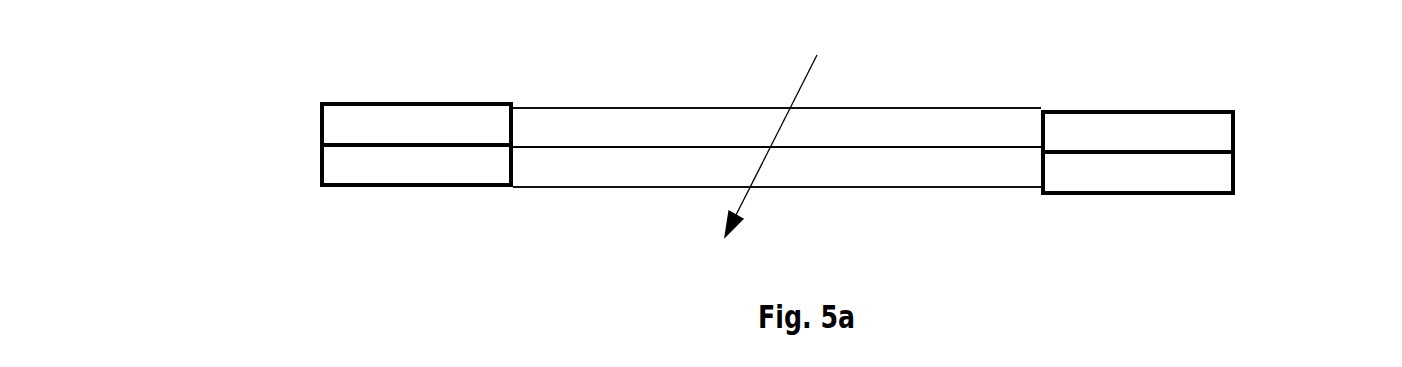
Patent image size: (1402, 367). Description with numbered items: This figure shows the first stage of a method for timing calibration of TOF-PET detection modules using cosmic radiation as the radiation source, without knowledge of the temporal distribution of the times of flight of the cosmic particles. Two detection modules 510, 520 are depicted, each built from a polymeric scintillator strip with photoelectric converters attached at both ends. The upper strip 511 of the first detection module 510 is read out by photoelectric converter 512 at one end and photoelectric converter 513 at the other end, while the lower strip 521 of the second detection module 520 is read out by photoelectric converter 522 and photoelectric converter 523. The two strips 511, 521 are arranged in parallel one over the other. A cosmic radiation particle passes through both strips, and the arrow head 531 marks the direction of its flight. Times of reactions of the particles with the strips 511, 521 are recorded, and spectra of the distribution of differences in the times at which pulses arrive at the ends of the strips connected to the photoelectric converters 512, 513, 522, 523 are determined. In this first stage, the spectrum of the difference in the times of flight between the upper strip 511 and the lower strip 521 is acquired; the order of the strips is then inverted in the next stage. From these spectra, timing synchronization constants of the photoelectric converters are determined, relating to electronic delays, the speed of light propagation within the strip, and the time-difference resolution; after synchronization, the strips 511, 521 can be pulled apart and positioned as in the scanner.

The detection module 510 is at (398, 93).
The scintillator strip 511 is at (913, 124).
The photoelectric converter 512 is at (320, 127).
The photoelectric converter 513 is at (1235, 135).
The detection module 520 is at (452, 203).
The scintillator strip 521 is at (960, 178).
The photoelectric converter 522 is at (328, 172).
The photoelectric converter 523 is at (1235, 185).
The arrow head 531 is at (727, 217).